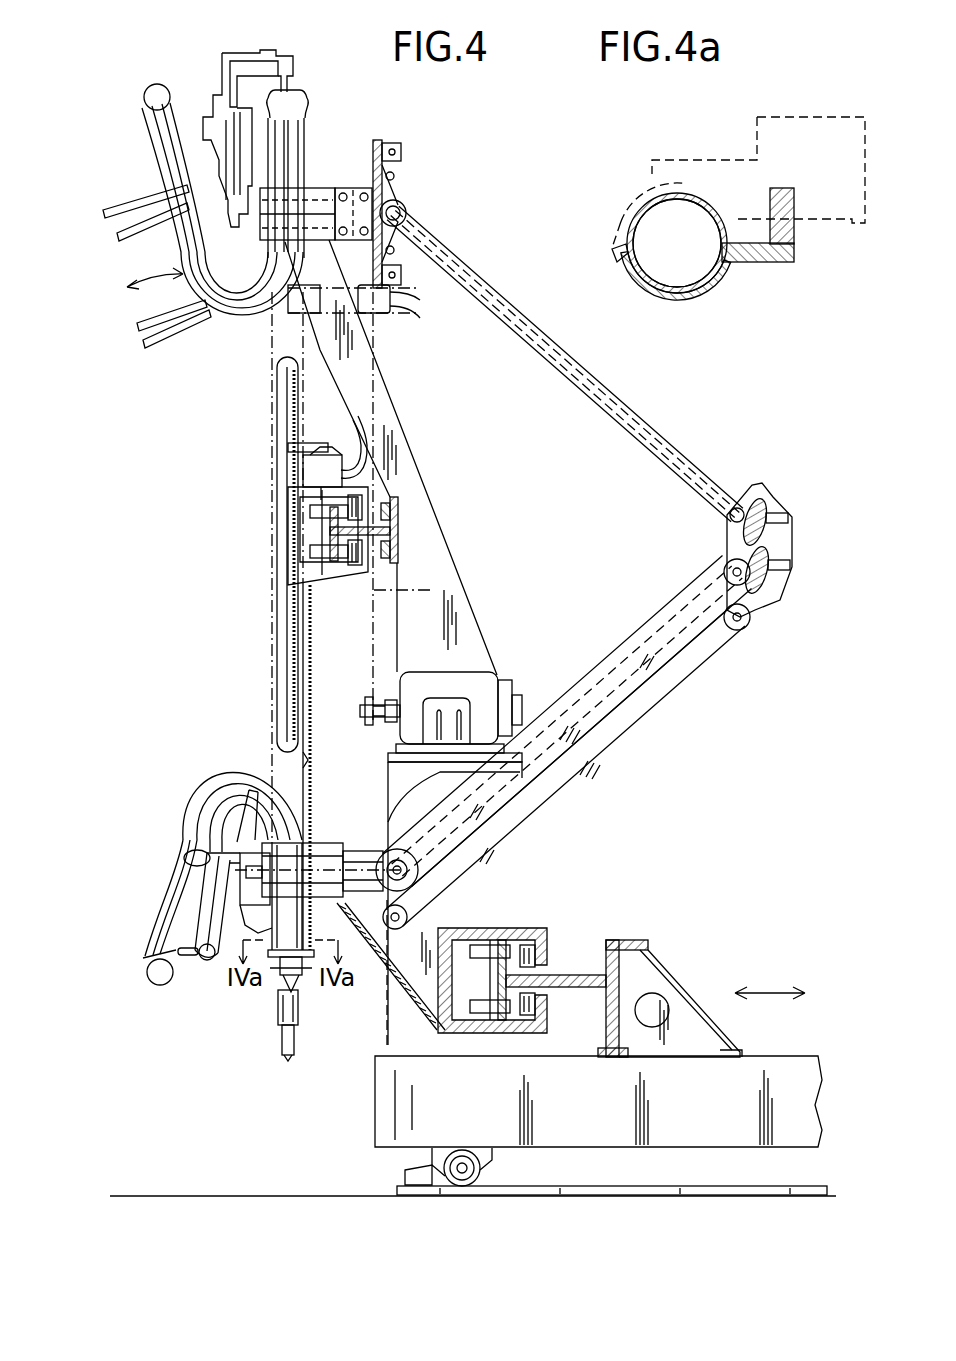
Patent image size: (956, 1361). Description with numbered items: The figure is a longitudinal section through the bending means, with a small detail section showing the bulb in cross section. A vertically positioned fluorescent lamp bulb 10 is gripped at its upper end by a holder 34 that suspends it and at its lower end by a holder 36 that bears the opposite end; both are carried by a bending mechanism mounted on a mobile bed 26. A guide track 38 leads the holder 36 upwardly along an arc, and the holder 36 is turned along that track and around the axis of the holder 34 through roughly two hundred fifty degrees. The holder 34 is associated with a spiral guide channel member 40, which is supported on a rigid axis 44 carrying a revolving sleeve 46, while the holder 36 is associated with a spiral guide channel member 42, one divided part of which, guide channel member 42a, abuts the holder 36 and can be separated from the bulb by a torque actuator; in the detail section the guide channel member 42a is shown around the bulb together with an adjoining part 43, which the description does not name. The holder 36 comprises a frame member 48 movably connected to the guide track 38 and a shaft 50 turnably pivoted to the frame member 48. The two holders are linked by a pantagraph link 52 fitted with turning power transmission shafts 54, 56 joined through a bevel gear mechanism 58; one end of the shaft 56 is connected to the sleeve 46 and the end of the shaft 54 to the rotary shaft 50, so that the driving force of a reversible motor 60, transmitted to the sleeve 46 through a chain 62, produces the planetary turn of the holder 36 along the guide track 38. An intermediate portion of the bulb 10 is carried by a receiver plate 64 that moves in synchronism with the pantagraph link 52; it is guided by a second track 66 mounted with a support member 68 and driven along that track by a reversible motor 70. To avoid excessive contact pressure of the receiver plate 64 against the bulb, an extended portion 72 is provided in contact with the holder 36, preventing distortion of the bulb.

In FIG. 4a, the fluorescent lamp bulb 10 is at (700, 226).
In FIG. 4, the mobile bed 26 is at (402, 1122).
In FIG. 4, the holder 34 is at (203, 216).
In FIG. 4, the holder 36 is at (352, 832).
In FIG. 4, the guide track 38 is at (563, 975).
In FIG. 4, the spiral guide channel member 40 is at (291, 128).
In FIG. 4, the spiral guide channel member 42 is at (195, 822).
In FIG. 4a, the divided guide channel member 42a is at (686, 297).
In FIG. 4a, the clamp flange 43 is at (786, 256).
In FIG. 4, the rigid axis 44 is at (318, 197).
In FIG. 4, the revolving sleeve 46 is at (350, 196).
In FIG. 4, the frame member 48 is at (432, 938).
In FIG. 4, the shaft 50 is at (323, 846).
In FIG. 4, the pantagraph link 52 is at (640, 725).
In FIG. 4, the turning power transmission shaft 54 is at (650, 656).
In FIG. 4, the turning power transmission shaft 56 is at (607, 404).
In FIG. 4, the bevel gear mechanism 58 is at (742, 560).
In FIG. 4, the reversible motor 60 is at (472, 696).
In FIG. 4, the chain 62 is at (430, 590).
In FIG. 4, the receiver plate 64 is at (285, 528).
In FIG. 4a, the receiver plate 64 is at (630, 190).
In FIG. 4, the second track 66 is at (398, 498).
In FIG. 4, the support member 68 is at (336, 588).
In FIG. 4, the reversible motor 70 is at (300, 468).
In FIG. 4a, the reversible motor 70 is at (813, 138).
In FIG. 4, the extended portion 72 is at (317, 750).
In FIG. 4a, the extended portion 72 is at (782, 222).